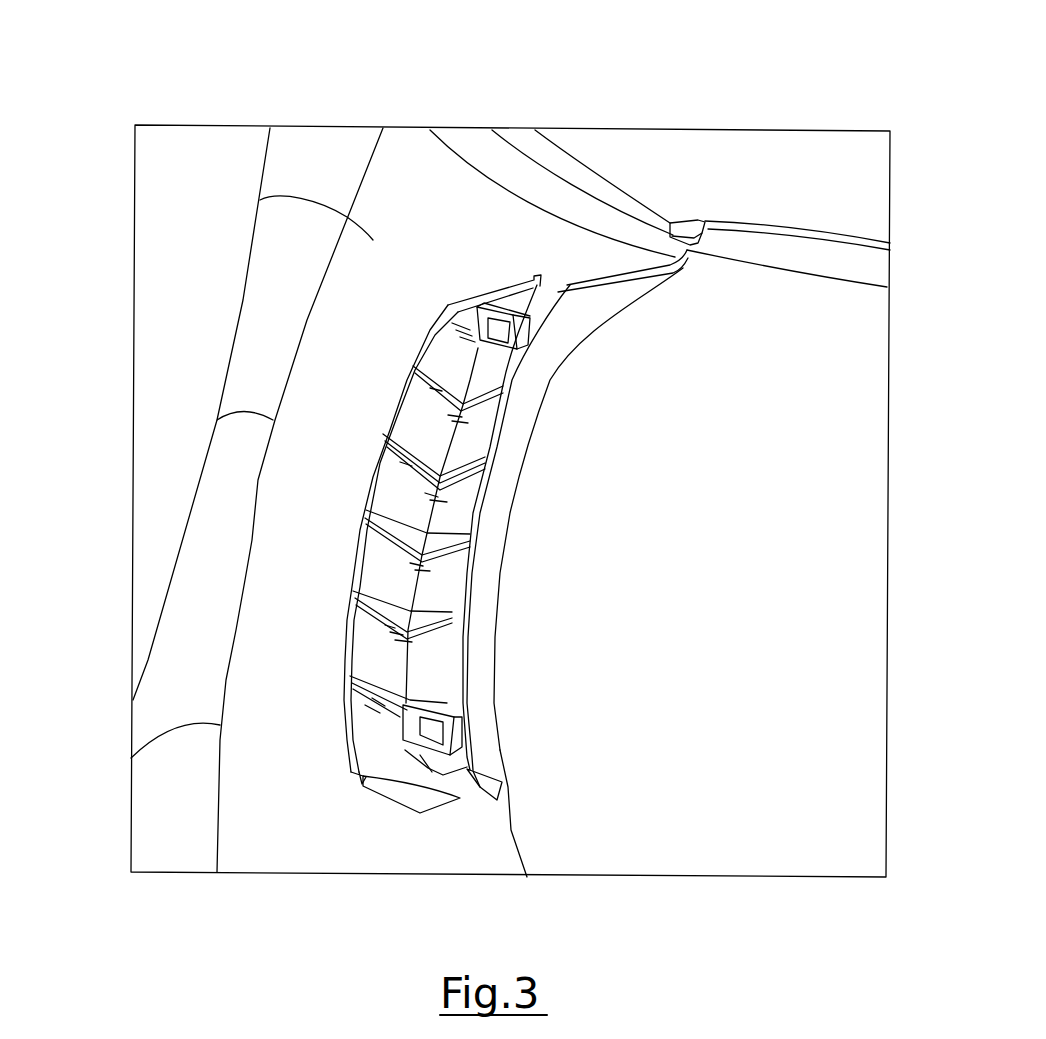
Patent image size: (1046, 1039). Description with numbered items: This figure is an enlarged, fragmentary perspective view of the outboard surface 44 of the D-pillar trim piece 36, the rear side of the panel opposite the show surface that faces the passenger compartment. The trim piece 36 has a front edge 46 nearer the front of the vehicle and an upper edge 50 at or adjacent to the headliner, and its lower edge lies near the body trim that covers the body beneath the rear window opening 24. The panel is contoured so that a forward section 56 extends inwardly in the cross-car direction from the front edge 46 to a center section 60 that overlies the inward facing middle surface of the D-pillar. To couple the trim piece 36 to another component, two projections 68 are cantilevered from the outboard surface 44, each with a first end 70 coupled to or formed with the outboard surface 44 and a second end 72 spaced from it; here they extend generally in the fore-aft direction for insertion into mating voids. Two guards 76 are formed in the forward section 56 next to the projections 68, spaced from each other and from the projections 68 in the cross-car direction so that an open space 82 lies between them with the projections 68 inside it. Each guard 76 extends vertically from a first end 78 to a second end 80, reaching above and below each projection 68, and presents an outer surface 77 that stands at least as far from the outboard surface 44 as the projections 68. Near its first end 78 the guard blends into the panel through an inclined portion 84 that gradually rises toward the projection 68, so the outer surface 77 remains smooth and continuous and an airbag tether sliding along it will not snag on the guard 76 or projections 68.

The rear window opening 24 is at (840, 522).
The D-pillar trim piece 36 is at (447, 161).
The outboard surface 44 is at (347, 217).
The front edge 46 is at (525, 843).
The upper edge 50 is at (540, 190).
The forward section 56 is at (410, 855).
The center section 60 is at (167, 448).
The projection 68 is at (537, 282).
The first end 70 is at (468, 762).
The second end 72 is at (505, 383).
The guard 76 is at (380, 565).
The outer surface 77 is at (347, 644).
The first end 78 is at (536, 278).
The second end 80 is at (353, 774).
The open space 82 is at (447, 497).
The inclined portion 84 is at (486, 290).